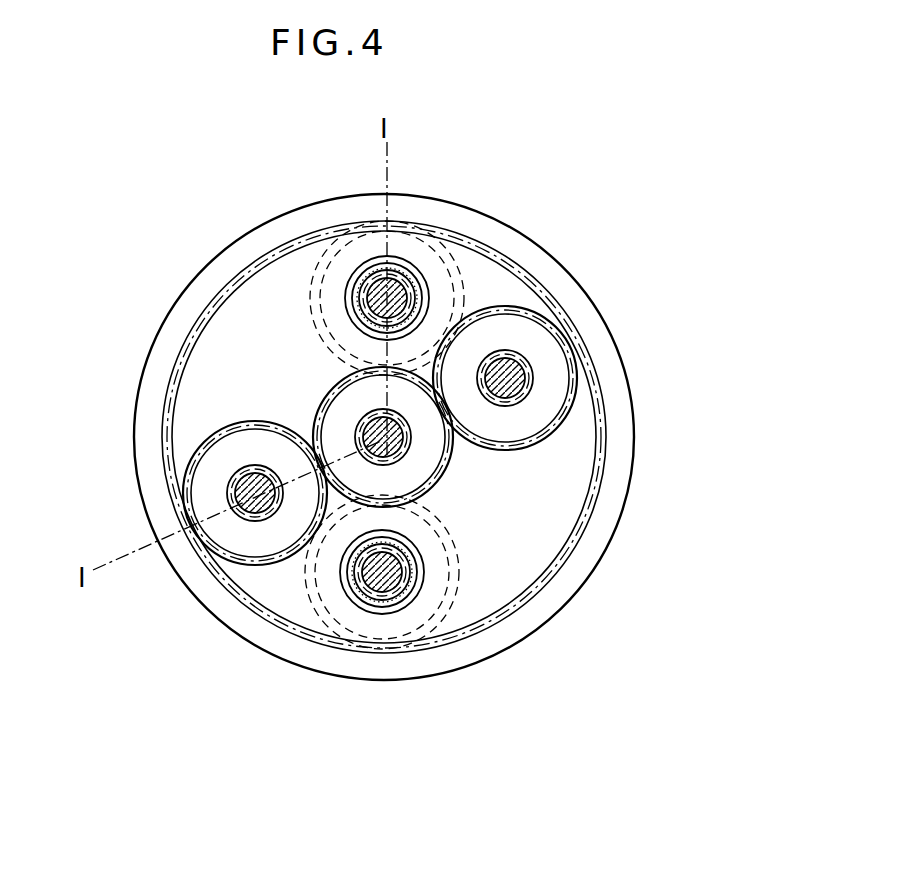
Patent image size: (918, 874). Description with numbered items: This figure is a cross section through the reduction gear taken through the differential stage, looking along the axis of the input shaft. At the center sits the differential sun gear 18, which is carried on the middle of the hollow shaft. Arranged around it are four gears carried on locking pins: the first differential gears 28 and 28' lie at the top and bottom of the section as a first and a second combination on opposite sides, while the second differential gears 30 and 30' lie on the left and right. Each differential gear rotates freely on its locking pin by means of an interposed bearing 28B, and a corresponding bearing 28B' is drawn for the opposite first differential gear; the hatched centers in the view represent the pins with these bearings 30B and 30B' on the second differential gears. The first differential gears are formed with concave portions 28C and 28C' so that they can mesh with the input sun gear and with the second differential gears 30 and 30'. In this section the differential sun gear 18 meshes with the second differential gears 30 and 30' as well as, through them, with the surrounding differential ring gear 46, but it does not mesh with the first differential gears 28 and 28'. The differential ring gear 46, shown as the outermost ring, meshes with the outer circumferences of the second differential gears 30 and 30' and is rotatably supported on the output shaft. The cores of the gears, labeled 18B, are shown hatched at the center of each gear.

The differential ring gear 46 is at (143, 425).
The differential sun gear 18 is at (424, 449).
The central cable core 18B is at (399, 449).
The first differential gear 28 is at (352, 279).
The bearing 28B is at (334, 299).
The concave portion 28C is at (357, 312).
The first differential gear 28' is at (425, 618).
The second coaxial cable shield 28B' is at (443, 572).
The second coaxial cable outer jacket 28C' is at (382, 618).
The second differential gear 30 is at (202, 547).
The power cable conductor 30B is at (230, 569).
The second differential gear 30' is at (568, 349).
The second power cable conductor 30B' is at (590, 356).